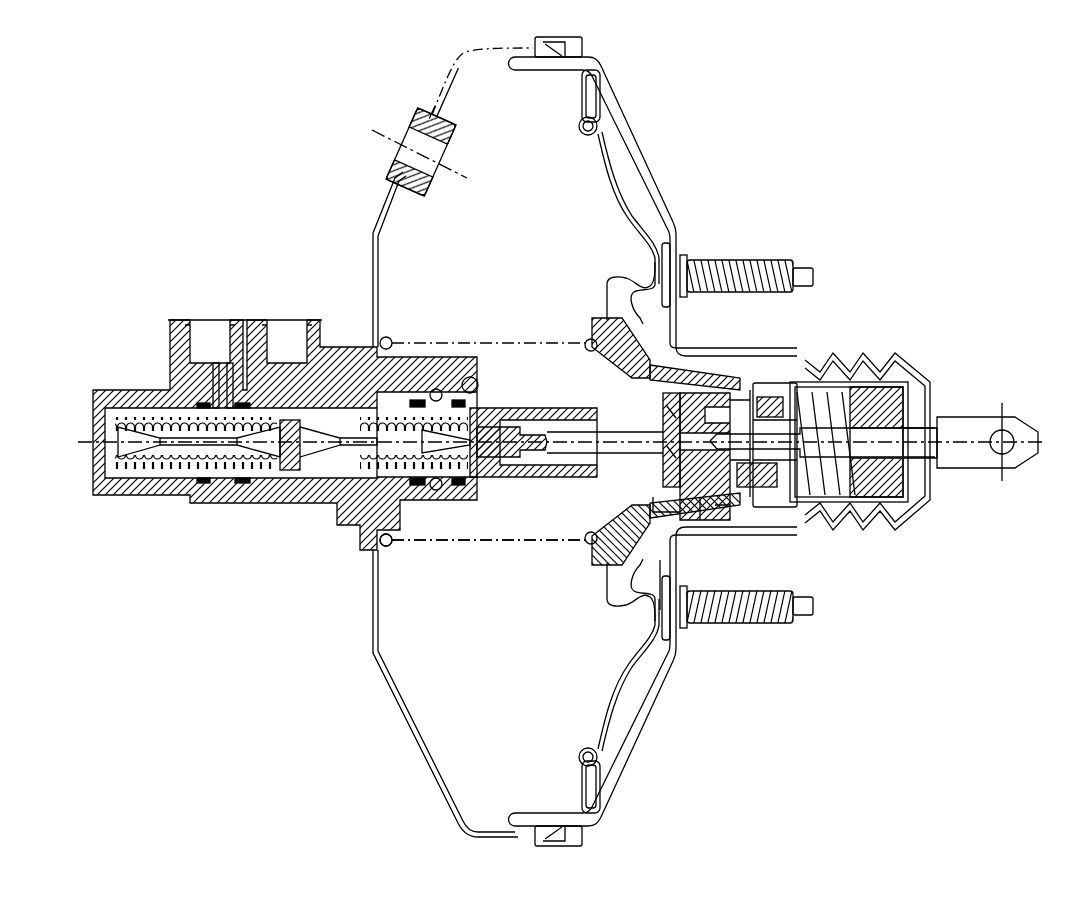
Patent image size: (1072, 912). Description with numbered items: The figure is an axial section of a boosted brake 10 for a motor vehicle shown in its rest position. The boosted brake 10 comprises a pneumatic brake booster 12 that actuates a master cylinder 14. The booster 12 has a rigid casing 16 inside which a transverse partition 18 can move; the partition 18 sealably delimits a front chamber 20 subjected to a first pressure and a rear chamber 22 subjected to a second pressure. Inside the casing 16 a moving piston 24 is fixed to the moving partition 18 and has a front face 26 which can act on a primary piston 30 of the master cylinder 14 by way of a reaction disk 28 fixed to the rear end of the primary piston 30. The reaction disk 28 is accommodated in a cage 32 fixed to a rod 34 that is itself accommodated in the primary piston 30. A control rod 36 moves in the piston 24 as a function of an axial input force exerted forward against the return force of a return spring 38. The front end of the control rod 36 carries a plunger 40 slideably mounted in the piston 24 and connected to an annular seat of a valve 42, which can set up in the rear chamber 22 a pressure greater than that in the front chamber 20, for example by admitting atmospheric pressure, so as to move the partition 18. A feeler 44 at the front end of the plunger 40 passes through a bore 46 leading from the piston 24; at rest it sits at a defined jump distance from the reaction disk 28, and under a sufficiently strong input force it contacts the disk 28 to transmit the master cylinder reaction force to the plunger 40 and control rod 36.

The boosted brake 10 is at (725, 131).
The pneumatic brake booster 12 is at (700, 211).
The master cylinder 14 is at (253, 523).
The rigid casing 16 is at (620, 100).
The transverse partition 18 is at (636, 200).
The front chamber 20 is at (427, 253).
The rear chamber 22 is at (640, 692).
The moving piston 24 is at (688, 306).
The front face 26 is at (695, 392).
The reaction disk 28 is at (652, 462).
The primary piston 30 is at (540, 408).
The cage 32 is at (650, 500).
The rod 34 is at (577, 436).
The control rod 36 is at (918, 450).
The return spring 38 is at (830, 516).
The plunger 40 is at (770, 390).
The valve 42 is at (773, 502).
The feeler 44 is at (700, 522).
The bore 46 is at (656, 424).